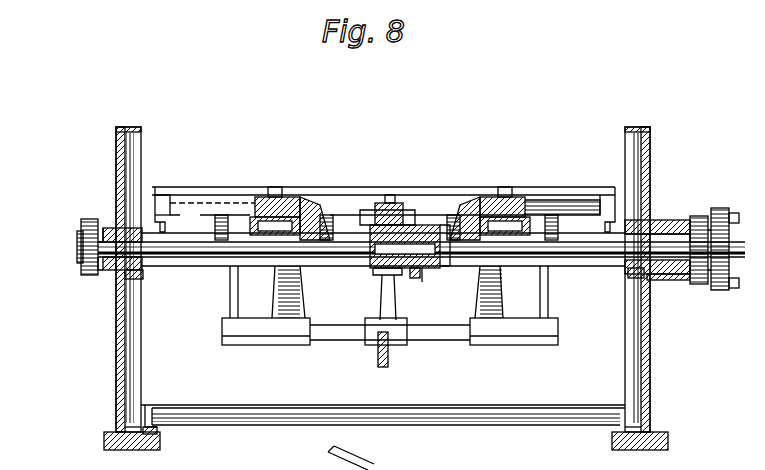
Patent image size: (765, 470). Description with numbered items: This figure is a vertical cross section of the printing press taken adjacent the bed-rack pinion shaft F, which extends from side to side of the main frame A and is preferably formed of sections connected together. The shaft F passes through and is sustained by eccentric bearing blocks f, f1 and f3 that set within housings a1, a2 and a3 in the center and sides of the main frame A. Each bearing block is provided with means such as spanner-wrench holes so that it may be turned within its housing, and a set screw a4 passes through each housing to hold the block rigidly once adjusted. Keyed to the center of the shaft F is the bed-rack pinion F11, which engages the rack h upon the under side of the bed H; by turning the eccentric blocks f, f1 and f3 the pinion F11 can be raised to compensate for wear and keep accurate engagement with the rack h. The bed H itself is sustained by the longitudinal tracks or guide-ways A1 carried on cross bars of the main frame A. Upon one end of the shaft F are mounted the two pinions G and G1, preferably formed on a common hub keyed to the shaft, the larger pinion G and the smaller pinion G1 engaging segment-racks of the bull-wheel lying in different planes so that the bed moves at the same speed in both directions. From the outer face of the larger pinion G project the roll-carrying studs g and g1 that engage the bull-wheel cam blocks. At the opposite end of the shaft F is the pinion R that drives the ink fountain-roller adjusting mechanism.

The main frame A is at (125, 378).
The bed-rack pinion shaft F is at (606, 264).
The housing a2 is at (110, 228).
The eccentric bearing block f1 is at (108, 270).
The pinion R is at (80, 231).
The bed H is at (340, 206).
The tracks or guide-ways A1 is at (274, 238).
The bed-rack pinion F11 is at (374, 274).
The rack h is at (404, 216).
The housing a3 is at (399, 276).
The set screw a4 is at (425, 278).
The eccentric bearing block f3 is at (440, 266).
The housing a1 is at (668, 225).
The eccentric bearing block f is at (672, 280).
The smaller pinion G1 is at (698, 218).
The larger pinion G is at (720, 212).
The roll-carrying stud g is at (738, 222).
The roll-carrying stud g1 is at (738, 290).